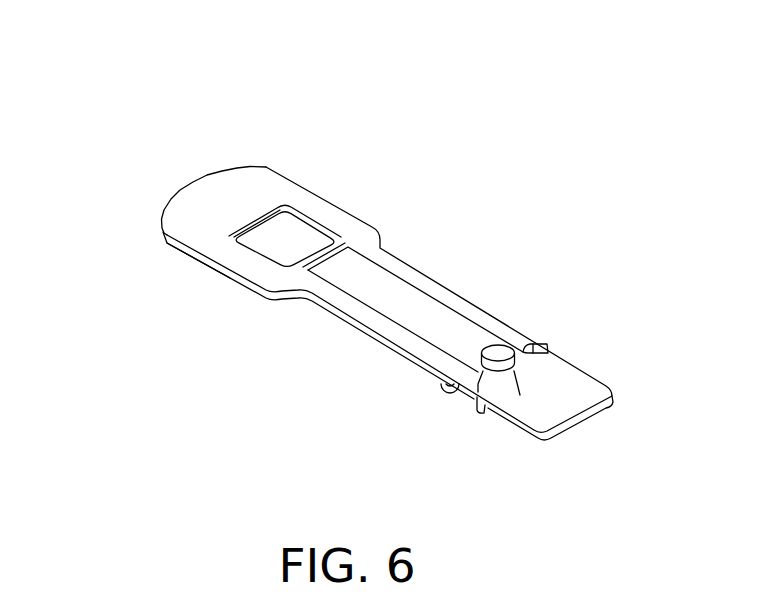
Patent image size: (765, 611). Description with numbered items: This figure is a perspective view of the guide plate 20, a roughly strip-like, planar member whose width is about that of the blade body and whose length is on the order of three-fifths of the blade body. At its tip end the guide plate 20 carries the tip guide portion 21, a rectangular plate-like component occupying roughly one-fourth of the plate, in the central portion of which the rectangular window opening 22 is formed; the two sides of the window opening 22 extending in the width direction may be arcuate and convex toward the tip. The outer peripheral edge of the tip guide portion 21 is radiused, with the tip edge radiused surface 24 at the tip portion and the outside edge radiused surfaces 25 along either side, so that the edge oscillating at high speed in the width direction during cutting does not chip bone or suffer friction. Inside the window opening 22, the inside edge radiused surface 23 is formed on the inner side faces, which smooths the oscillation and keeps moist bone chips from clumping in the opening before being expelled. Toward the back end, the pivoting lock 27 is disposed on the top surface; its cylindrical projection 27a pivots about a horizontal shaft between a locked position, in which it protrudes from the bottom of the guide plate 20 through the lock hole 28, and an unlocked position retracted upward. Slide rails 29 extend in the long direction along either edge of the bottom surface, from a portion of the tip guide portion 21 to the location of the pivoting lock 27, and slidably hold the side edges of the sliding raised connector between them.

The guide plate 20 is at (352, 138).
The tip guide portion 21 is at (245, 283).
The window opening 22 is at (305, 238).
The inside edge radiused surface 23 is at (250, 225).
The tip edge radiused surface 24 is at (212, 175).
The outside edge radiused surface 25 is at (181, 244).
The pivoting lock 27 is at (463, 412).
The cylindrical projection 27a is at (497, 348).
The lock hole 28 is at (520, 395).
The slide rails 29 is at (425, 283).